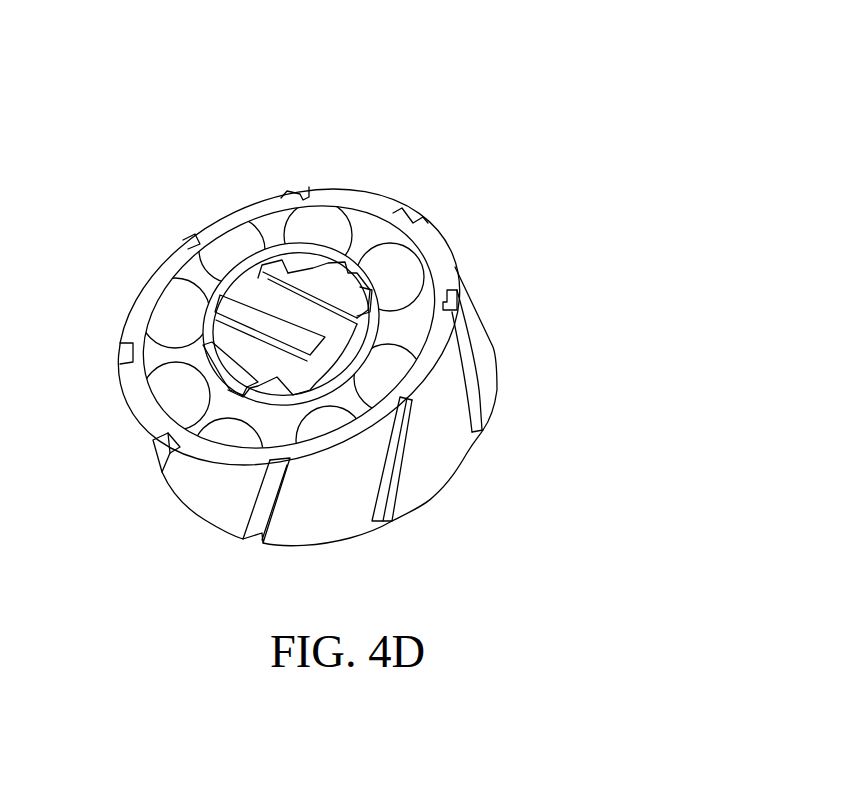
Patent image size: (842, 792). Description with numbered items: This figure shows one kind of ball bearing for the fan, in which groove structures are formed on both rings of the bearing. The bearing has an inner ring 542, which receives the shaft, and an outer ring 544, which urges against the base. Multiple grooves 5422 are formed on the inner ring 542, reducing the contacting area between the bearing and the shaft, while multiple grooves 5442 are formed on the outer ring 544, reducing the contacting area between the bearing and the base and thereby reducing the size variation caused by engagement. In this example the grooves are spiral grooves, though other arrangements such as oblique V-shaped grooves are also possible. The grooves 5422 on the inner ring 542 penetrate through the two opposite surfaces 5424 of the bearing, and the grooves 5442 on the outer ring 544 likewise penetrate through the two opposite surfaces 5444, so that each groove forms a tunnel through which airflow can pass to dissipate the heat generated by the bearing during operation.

The inner ring 542 is at (243, 270).
The outer ring 544 is at (322, 198).
The longitudinal grooves 5422 is at (275, 275).
The opposite surfaces 5424 is at (353, 270).
The grooves 5442 is at (473, 383).
The opposite surfaces 5444 is at (437, 260).